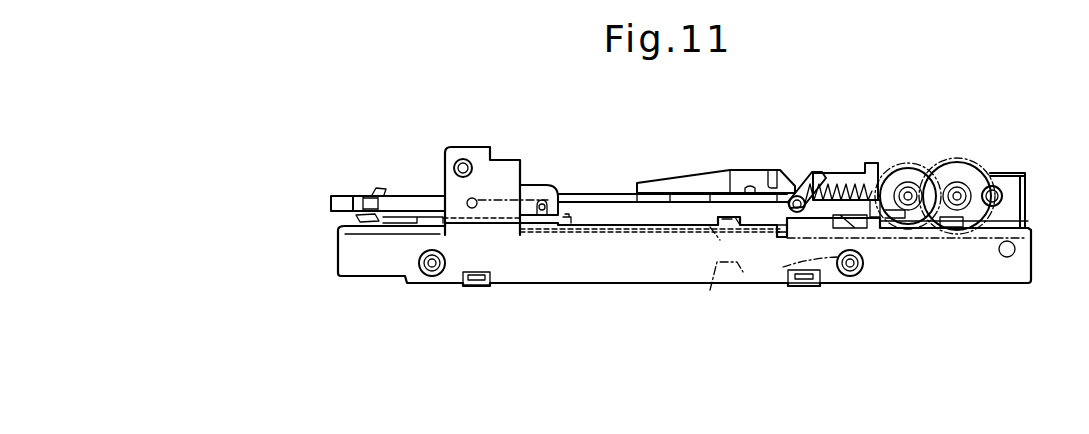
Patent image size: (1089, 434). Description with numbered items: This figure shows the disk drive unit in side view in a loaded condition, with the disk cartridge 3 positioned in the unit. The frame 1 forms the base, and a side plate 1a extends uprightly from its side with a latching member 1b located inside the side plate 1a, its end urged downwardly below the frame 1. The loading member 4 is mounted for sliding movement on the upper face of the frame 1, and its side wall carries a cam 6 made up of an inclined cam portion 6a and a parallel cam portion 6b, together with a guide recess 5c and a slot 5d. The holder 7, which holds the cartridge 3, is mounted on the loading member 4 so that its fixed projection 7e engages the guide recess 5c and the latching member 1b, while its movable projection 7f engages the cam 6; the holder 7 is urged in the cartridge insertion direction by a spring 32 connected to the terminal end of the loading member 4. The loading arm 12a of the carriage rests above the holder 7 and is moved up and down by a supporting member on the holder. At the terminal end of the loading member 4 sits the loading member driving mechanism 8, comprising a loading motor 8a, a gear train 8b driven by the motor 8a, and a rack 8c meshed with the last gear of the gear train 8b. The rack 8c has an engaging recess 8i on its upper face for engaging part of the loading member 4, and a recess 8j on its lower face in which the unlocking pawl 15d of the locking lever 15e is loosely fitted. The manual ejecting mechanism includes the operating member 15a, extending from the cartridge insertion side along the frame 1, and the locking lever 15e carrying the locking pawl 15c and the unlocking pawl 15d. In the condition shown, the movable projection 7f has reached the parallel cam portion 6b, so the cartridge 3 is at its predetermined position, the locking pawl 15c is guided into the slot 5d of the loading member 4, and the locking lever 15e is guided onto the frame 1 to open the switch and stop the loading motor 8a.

The frame 1 is at (370, 262).
The side plate 1a is at (473, 150).
The latching member 1b is at (537, 186).
The disk cartridge 3 is at (338, 196).
The loading member 4 is at (610, 197).
The guide recess 5c is at (556, 225).
The slot 5d is at (715, 228).
The cam 6 is at (818, 183).
The inclined cam portion 6a is at (813, 222).
The parallel cam portion 6b is at (795, 217).
The holder 7 is at (398, 206).
The fixed projection 7e is at (549, 203).
The movable projection 7f is at (800, 192).
The loading member driving mechanism 8 is at (936, 152).
The loading motor 8a is at (1028, 188).
The gear train 8b is at (972, 165).
The rack 8c is at (893, 200).
The engaging recess 8i is at (877, 200).
The recess 8j is at (945, 225).
The loading arm 12a is at (740, 172).
The operating member 15a is at (490, 237).
The locking pawl 15c is at (737, 228).
The unlocking pawl 15d is at (880, 192).
The locking lever 15e is at (712, 290).
The spring 32 is at (840, 192).